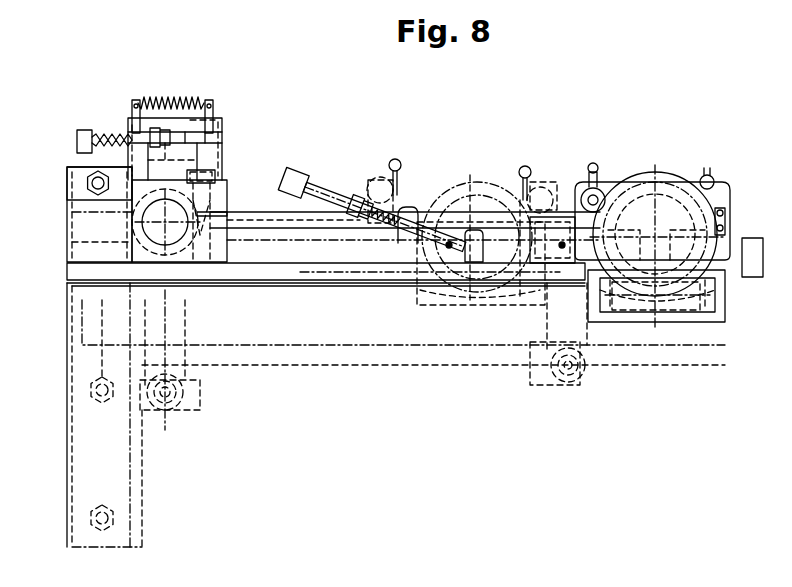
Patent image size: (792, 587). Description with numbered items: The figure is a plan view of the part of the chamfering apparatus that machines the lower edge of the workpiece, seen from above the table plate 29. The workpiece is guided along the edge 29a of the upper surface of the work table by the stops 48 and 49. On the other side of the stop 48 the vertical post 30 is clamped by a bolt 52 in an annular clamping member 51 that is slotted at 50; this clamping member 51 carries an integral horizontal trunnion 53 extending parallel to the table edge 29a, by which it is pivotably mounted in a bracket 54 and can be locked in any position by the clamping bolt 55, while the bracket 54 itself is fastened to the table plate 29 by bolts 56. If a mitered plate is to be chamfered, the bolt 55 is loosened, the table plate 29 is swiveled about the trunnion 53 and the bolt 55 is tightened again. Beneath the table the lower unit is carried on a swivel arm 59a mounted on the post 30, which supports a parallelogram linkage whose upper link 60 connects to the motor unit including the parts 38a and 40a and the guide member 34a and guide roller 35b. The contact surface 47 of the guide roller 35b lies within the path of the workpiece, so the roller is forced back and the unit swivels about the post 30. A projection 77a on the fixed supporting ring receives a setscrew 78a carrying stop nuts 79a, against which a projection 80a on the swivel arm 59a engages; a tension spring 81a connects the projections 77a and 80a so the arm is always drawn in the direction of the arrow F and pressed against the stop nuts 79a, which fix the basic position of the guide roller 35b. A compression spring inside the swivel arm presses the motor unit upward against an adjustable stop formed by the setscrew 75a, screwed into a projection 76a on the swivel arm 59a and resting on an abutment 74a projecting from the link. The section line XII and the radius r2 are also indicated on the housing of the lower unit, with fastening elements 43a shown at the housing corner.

The table plate 29 is at (173, 437).
The table edge 29a is at (263, 285).
The post 30 is at (152, 228).
The guide member 34a is at (700, 300).
The guide roller 35b is at (715, 270).
The motor unit housing part 38a is at (683, 187).
The motor unit part 40a is at (717, 230).
The fastening element 43a is at (593, 198).
The contact surface 47 is at (673, 287).
The stop 48 is at (305, 270).
The stop 49 is at (753, 277).
The slot 50 is at (210, 220).
The clamping member 51 is at (177, 180).
The bolt 52 is at (200, 205).
The trunnion 53 is at (75, 198).
The bracket 54 is at (80, 173).
The bolt 55 is at (98, 175).
The bolts 56 is at (102, 382).
The swivel arm 59a is at (262, 213).
The link 60 is at (507, 230).
The abutment 74a is at (472, 232).
The setscrew 75a is at (342, 178).
The projection 76a is at (412, 212).
The projection 77a is at (217, 128).
The setscrew 78a is at (190, 140).
The stop nuts 79a is at (155, 170).
The projection 80a is at (132, 125).
The tension spring 81a is at (148, 175).
The arrow F is at (215, 90).
The section line XII is at (640, 162).
The radius r2 is at (660, 180).